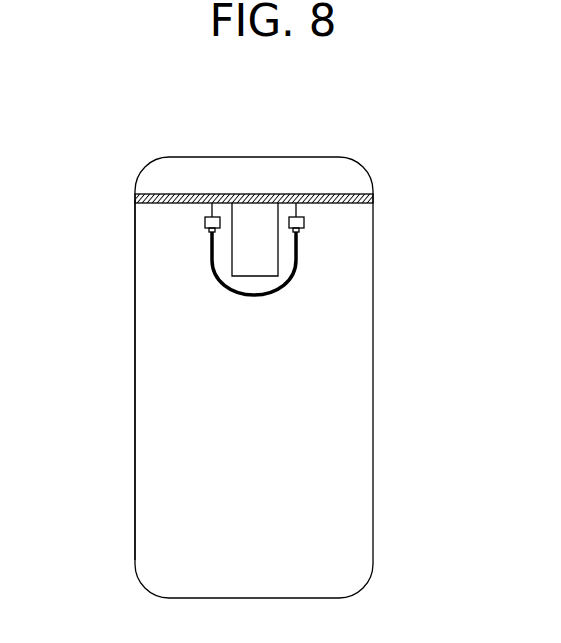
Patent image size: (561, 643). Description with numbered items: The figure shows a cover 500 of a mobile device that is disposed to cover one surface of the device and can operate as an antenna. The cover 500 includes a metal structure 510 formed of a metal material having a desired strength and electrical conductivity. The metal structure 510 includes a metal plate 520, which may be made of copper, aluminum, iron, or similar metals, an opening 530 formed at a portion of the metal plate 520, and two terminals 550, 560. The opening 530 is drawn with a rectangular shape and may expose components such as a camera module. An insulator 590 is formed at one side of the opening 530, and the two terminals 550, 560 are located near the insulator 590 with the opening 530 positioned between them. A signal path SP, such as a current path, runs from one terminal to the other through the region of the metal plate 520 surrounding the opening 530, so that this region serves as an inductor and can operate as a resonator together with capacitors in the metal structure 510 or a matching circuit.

The cover 500 is at (240, 95).
The metal structure 510 is at (370, 163).
The metal plate 520 is at (136, 312).
The opening 530 is at (258, 258).
The terminal 550 is at (212, 216).
The terminal 560 is at (296, 216).
The insulator 590 is at (136, 198).
The signal path SP is at (252, 297).